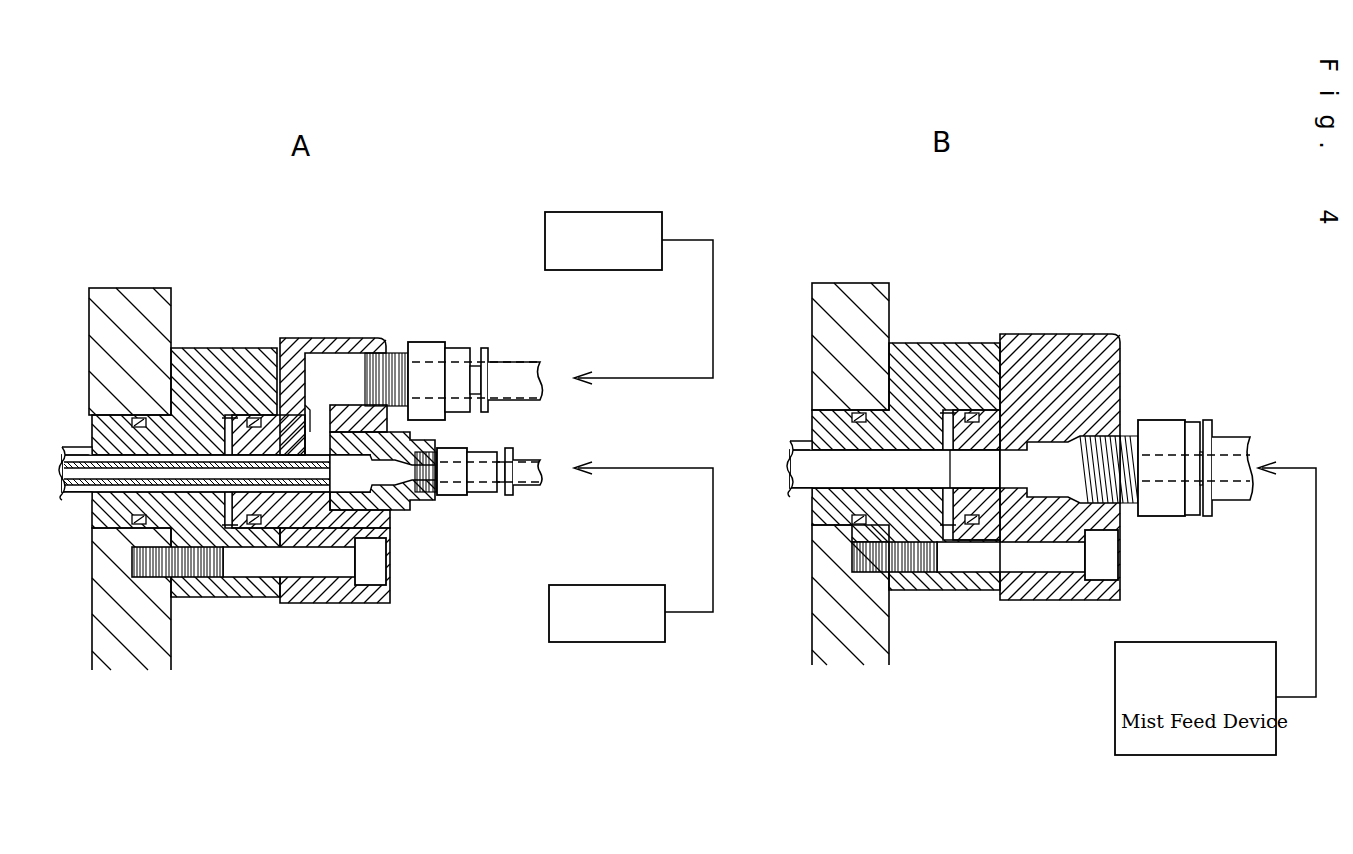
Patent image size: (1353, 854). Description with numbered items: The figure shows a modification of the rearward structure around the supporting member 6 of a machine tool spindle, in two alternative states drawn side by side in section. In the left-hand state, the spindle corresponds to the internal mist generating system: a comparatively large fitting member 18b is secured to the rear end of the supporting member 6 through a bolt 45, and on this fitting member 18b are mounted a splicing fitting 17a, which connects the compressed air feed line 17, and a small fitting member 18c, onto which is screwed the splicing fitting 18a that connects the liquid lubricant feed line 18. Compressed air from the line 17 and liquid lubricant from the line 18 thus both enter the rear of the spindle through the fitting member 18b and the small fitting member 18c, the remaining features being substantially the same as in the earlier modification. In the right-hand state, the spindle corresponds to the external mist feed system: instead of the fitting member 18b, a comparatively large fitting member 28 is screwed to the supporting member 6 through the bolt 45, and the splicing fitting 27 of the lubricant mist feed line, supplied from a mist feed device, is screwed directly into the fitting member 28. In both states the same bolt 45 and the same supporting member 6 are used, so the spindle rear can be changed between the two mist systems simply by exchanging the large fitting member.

The supporting member 6 is at (206, 352).
The compressed air feed line 17 is at (645, 378).
The splicing fitting 17a is at (457, 346).
The liquid lubricant feed line 18 is at (655, 468).
The splicing fitting 18a is at (483, 494).
The fitting member 18b is at (313, 340).
The small fitting member 18c is at (410, 508).
The splicing fitting 27 is at (1172, 422).
The fitting member 28 is at (1068, 356).
The bolt 45 is at (317, 565).